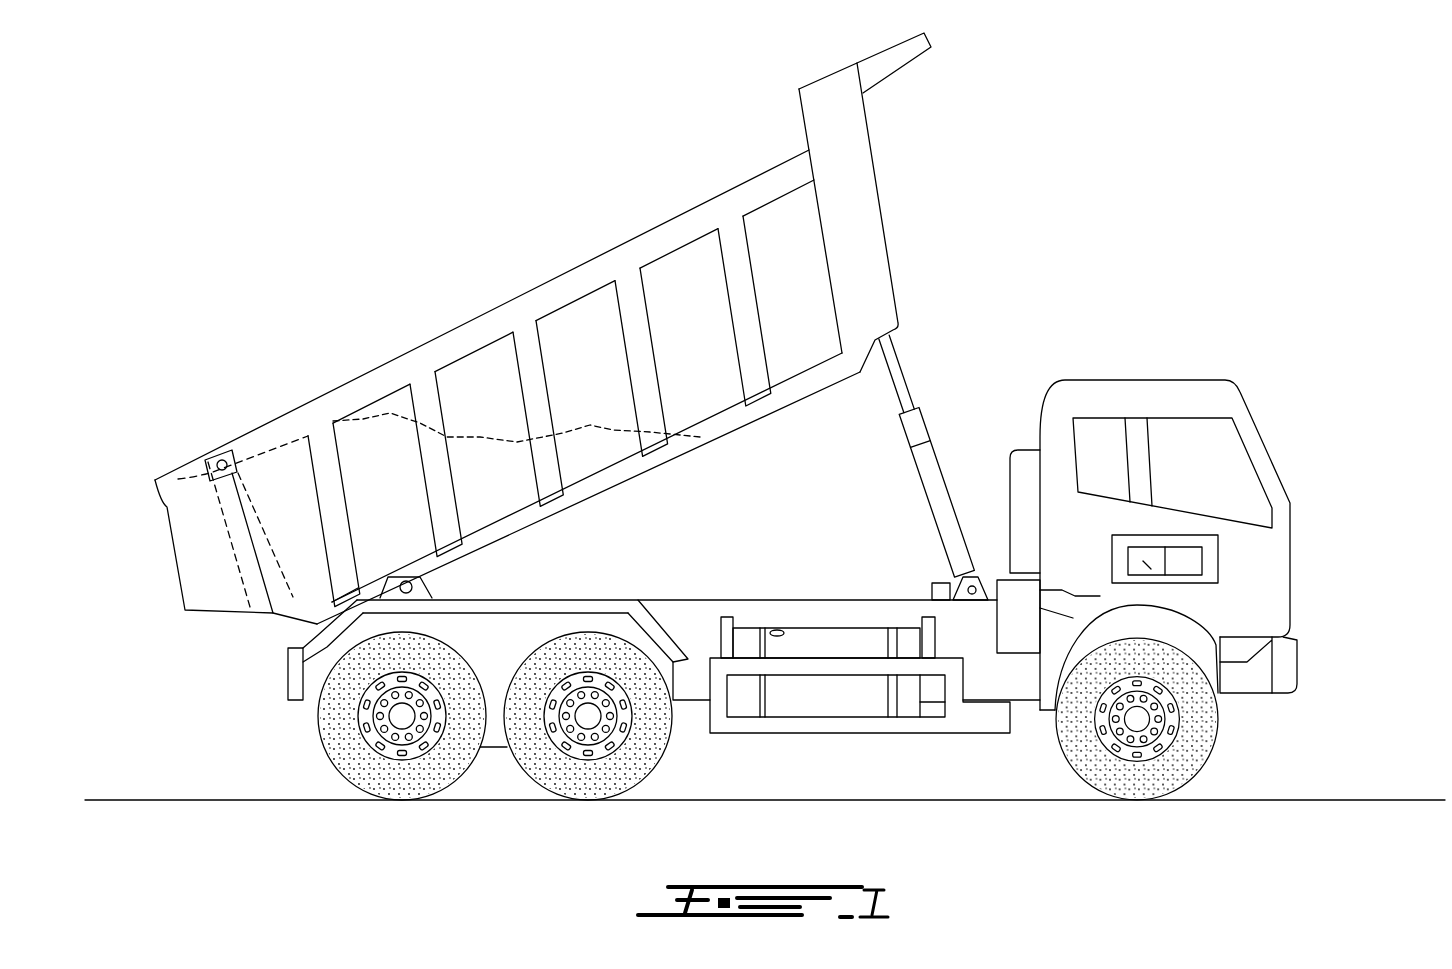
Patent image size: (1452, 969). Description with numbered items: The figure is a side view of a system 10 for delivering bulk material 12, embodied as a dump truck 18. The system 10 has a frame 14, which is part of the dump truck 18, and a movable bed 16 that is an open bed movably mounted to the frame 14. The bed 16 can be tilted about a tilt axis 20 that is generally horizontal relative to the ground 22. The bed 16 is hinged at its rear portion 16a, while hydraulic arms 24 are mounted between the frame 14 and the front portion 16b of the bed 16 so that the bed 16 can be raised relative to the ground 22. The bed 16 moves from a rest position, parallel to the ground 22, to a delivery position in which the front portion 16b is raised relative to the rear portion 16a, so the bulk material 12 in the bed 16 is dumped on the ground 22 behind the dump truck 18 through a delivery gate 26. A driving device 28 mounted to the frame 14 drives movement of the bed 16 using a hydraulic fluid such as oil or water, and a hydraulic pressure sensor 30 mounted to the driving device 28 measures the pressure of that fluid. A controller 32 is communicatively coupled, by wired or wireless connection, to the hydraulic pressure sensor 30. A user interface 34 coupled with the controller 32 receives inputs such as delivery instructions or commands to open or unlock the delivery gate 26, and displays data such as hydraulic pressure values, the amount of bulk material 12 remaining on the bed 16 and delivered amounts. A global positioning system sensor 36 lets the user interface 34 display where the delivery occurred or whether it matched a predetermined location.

The system 10 is at (765, 441).
The bulk material 12 is at (368, 418).
The frame 14 is at (1012, 678).
The movable bed 16 is at (541, 347).
The rear portion 16a is at (340, 567).
The front portion 16b is at (898, 313).
The dump truck 18 is at (1189, 527).
The tilt axis 20 is at (397, 593).
The ground 22 is at (1424, 796).
The hydraulic arms 24 is at (920, 413).
The delivery gate 26 is at (182, 478).
The driving device 28 is at (980, 414).
The hydraulic pressure sensor 30 is at (947, 592).
The controller 32 is at (1218, 543).
The user interface 34 is at (1202, 570).
The global positioning system (GPS) sensor 36 is at (1147, 565).